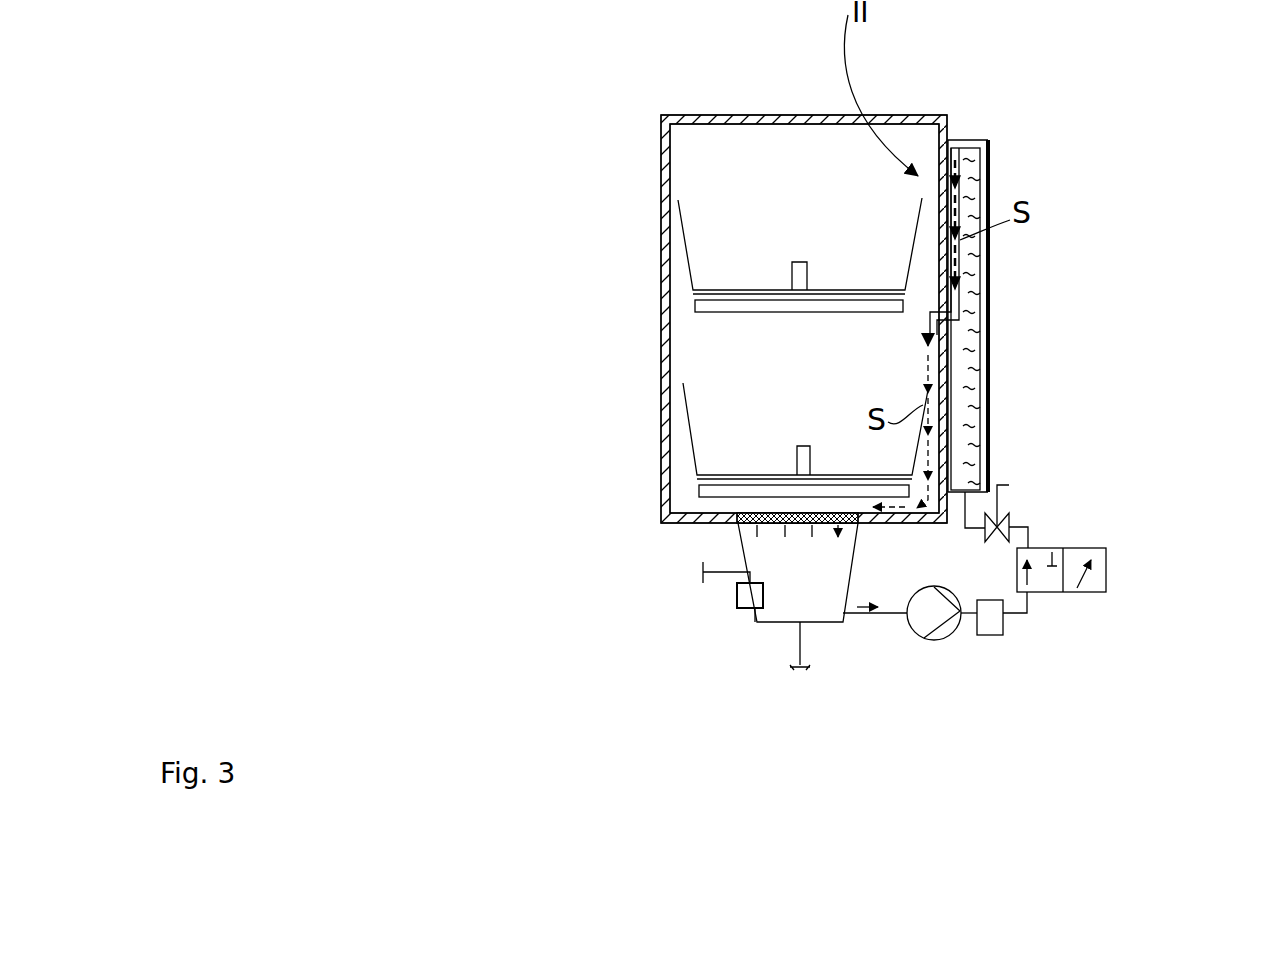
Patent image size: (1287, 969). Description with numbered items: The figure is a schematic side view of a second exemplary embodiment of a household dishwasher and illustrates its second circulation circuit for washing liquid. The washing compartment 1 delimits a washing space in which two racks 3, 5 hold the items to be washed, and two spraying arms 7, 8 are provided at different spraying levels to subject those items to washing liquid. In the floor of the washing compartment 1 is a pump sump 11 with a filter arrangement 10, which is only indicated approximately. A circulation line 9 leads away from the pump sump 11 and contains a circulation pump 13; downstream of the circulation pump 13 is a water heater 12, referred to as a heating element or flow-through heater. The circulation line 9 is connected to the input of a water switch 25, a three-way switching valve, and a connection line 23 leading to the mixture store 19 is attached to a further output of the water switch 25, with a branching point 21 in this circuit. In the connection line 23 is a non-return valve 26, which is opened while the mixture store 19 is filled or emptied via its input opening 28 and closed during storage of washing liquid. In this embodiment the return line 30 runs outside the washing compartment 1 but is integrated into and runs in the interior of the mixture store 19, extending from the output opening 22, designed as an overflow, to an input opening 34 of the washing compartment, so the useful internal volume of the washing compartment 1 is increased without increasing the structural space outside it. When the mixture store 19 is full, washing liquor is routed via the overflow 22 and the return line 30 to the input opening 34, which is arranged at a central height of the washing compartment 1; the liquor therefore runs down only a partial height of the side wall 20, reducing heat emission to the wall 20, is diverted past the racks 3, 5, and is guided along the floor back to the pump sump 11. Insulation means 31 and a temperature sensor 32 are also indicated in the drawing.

The washing compartment 1 is at (784, 111).
The rack 3 is at (680, 218).
The rack 5 is at (685, 403).
The spraying arm 7 is at (761, 313).
The spraying arm 8 is at (752, 488).
The circulation line 9 is at (870, 613).
The filter arrangement 10 is at (805, 524).
The pump sump 11 is at (855, 548).
The water heater 12 is at (1000, 636).
The circulation pump 13 is at (943, 638).
The mixture store 19 is at (965, 162).
The washing compartment side wall 20 is at (950, 128).
The branching point 21 is at (1126, 527).
The output opening of the mixture store 22 is at (946, 160).
The connection line 23 is at (1028, 526).
The water switch 25 is at (1106, 556).
The non-return valve 26 is at (1000, 538).
The input opening of the mixture store 28 is at (963, 495).
The return line 30 is at (968, 317).
The insulation means 31 is at (988, 390).
The temperature sensor 32 is at (738, 596).
The input opening of the washing compartment 34 is at (916, 331).